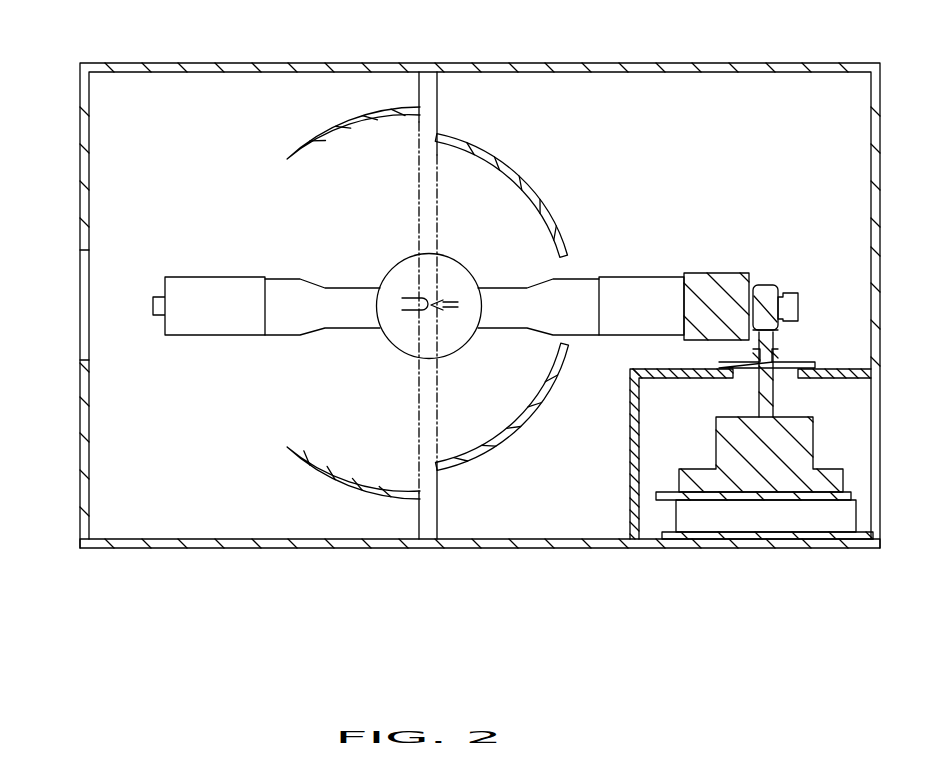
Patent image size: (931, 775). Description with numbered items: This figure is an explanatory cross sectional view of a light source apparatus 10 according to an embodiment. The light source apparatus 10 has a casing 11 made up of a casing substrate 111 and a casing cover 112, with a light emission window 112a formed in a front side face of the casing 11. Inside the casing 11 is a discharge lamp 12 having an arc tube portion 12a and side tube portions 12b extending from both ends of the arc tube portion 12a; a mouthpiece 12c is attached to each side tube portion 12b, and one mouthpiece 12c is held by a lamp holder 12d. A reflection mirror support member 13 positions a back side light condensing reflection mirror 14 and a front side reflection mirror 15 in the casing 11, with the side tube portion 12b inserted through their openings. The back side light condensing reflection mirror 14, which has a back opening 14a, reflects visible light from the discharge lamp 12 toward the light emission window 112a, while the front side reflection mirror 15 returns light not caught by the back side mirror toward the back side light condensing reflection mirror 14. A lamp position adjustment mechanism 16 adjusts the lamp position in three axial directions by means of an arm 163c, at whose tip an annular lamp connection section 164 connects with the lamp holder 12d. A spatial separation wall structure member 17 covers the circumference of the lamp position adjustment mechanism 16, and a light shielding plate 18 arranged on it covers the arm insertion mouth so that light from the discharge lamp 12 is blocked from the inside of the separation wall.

The light source apparatus 10 is at (445, 323).
The casing 11 is at (445, 323).
The casing substrate 111 is at (357, 549).
The casing cover 112 is at (445, 323).
The light emission window 112a is at (80, 331).
The discharge lamp 12 is at (451, 308).
The arc tube portion 12a is at (457, 350).
The side tube portion 12b is at (339, 316).
The mouthpiece 12c is at (232, 322).
The lamp holder 12d is at (714, 277).
The reflection mirror support member 13 is at (432, 523).
The back side light condensing reflection mirror 14 is at (524, 305).
The back opening 14a is at (570, 346).
The front side reflection mirror 15 is at (330, 477).
The lamp position adjustment mechanism 16 is at (713, 441).
The arm 163c is at (774, 345).
The lamp connection section 164 is at (771, 290).
The spatial separation wall structure member 17 is at (631, 485).
The light shielding plate 18 is at (783, 364).